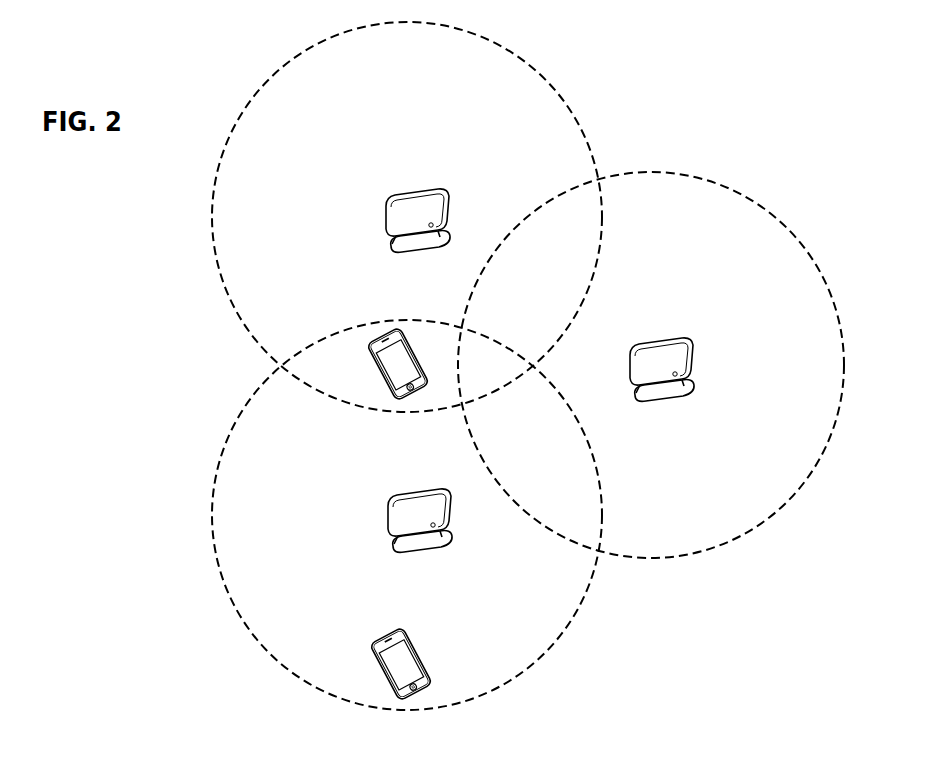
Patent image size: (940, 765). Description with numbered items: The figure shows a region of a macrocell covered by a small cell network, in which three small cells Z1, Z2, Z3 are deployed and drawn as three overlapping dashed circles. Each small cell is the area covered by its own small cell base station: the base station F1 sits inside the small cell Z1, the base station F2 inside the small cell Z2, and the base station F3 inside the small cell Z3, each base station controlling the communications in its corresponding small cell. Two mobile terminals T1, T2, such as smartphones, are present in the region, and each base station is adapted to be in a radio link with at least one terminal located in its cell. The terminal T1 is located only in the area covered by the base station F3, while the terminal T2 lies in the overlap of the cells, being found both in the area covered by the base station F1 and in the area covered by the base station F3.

The small cell Z1 is at (212, 224).
The small cell Z2 is at (845, 371).
The small cell Z3 is at (212, 522).
The small cell base station F1 is at (385, 216).
The small cell base station F2 is at (629, 366).
The small cell base station F3 is at (387, 516).
The mobile terminal T1 is at (368, 660).
The mobile terminal T2 is at (380, 384).